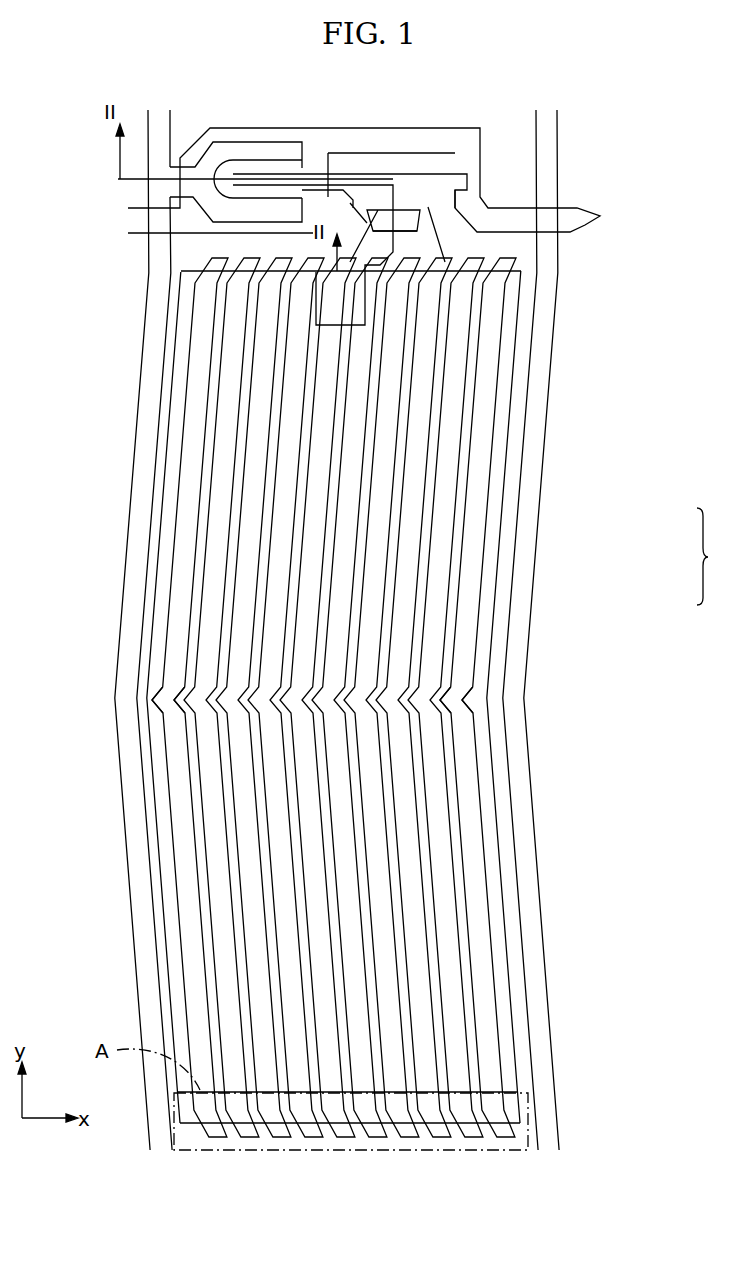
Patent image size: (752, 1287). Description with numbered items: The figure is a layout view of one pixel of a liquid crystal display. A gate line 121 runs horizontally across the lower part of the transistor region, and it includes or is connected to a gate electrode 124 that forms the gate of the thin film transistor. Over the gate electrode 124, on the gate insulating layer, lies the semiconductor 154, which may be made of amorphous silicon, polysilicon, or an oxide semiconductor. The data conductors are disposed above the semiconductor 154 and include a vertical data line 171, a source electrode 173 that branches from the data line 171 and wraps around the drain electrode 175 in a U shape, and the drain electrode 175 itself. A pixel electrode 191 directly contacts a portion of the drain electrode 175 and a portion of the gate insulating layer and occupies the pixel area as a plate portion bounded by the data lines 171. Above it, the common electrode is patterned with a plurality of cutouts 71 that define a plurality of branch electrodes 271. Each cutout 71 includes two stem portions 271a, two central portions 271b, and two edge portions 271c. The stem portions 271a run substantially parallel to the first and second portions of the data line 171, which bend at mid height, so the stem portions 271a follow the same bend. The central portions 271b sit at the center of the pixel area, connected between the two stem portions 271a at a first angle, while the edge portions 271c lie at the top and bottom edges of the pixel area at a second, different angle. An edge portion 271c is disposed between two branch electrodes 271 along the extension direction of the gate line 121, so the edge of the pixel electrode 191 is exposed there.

The gate line 121 is at (384, 180).
The gate electrode 124 is at (328, 208).
The semiconductor 154 is at (303, 167).
The data line 171 is at (150, 389).
The source electrode 173 is at (245, 141).
The drain electrode 175 is at (435, 173).
The pixel electrode 191 is at (500, 620).
The branch electrode 271 is at (481, 382).
The stem portion 271a is at (496, 496).
The central portion 271b is at (440, 712).
The edge portion 271c is at (525, 271).
The cutout 71 is at (688, 558).